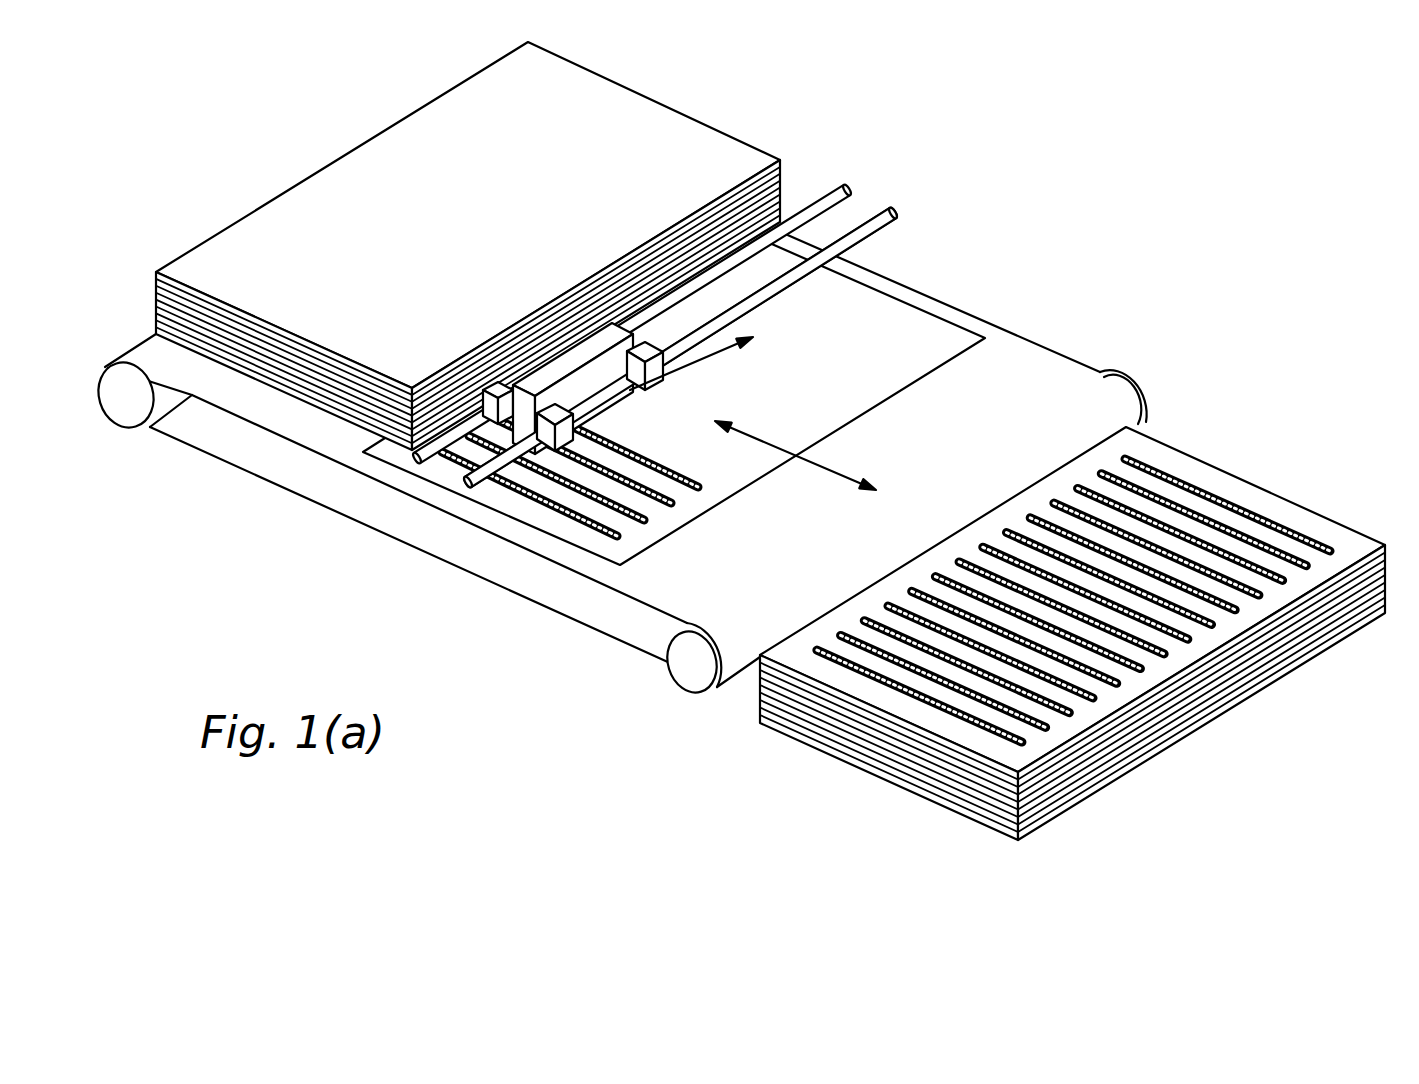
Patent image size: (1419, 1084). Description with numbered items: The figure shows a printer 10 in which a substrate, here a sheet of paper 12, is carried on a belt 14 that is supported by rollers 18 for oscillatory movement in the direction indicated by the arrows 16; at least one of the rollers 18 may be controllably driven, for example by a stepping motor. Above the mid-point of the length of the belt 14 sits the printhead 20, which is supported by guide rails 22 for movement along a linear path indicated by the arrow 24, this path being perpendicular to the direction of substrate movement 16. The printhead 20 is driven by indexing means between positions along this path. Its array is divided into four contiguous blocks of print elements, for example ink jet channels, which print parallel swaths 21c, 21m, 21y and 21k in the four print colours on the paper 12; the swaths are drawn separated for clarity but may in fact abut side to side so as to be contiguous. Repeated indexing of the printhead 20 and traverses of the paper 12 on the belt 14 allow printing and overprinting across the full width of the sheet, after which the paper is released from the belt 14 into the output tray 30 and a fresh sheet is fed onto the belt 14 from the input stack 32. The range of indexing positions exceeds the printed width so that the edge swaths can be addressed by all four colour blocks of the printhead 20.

The printing system 10 is at (1098, 180).
The sheet of paper 12 is at (881, 361).
The belt 14 is at (383, 533).
The arrows indicating oscillatory movement 16 is at (819, 459).
The rollers 18 is at (123, 405).
The printhead 20 is at (601, 395).
The cyan swath 21c is at (698, 487).
The magenta swath 21m is at (671, 503).
The yellow swath 21y is at (644, 520).
The black swath 21k is at (617, 536).
The guide rails 22 is at (850, 188).
The arrow indicating printhead path 24 is at (725, 352).
The output tray 30 is at (1177, 460).
The input stack 32 is at (470, 213).